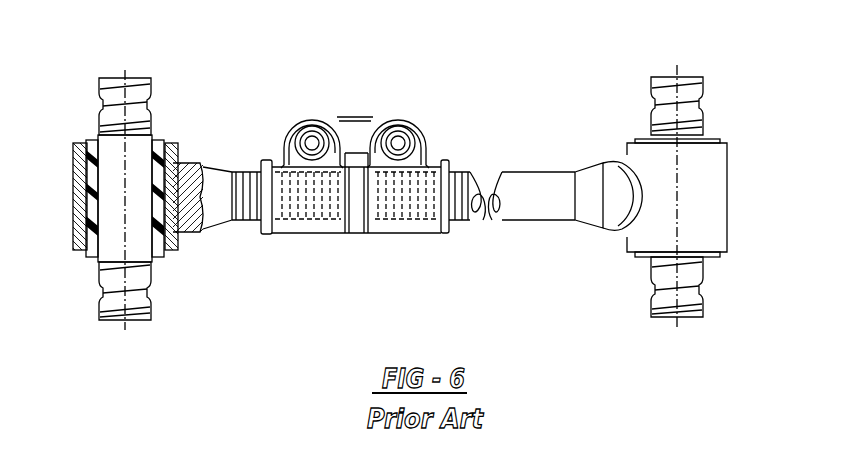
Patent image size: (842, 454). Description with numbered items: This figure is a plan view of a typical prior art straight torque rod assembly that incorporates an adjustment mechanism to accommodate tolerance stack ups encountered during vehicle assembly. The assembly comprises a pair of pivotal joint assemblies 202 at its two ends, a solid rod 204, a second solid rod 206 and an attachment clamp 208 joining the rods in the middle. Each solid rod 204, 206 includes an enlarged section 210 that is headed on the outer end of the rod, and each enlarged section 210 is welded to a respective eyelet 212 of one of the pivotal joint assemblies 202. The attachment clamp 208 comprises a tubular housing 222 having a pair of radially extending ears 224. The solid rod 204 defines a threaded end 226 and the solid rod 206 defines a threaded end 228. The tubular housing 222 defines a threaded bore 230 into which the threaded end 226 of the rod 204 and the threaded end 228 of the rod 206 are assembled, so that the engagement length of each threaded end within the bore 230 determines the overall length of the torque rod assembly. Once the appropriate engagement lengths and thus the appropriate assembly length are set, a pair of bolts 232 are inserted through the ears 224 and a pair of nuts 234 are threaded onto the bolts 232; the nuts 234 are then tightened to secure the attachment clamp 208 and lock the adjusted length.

The pivotal joint assembly 202 is at (120, 193).
The solid rod 204 is at (218, 215).
The solid rod 206 is at (528, 215).
The attachment clamp 208 is at (355, 99).
The enlarged section 210 is at (175, 163).
The eyelet 212 is at (75, 158).
The tubular housing 222 is at (355, 240).
The ears 224 is at (310, 123).
The threaded end 226 is at (253, 208).
The threaded end 228 is at (470, 215).
The threaded bore 230 is at (307, 227).
The bolts 232 is at (285, 130).
The nuts 234 is at (314, 140).